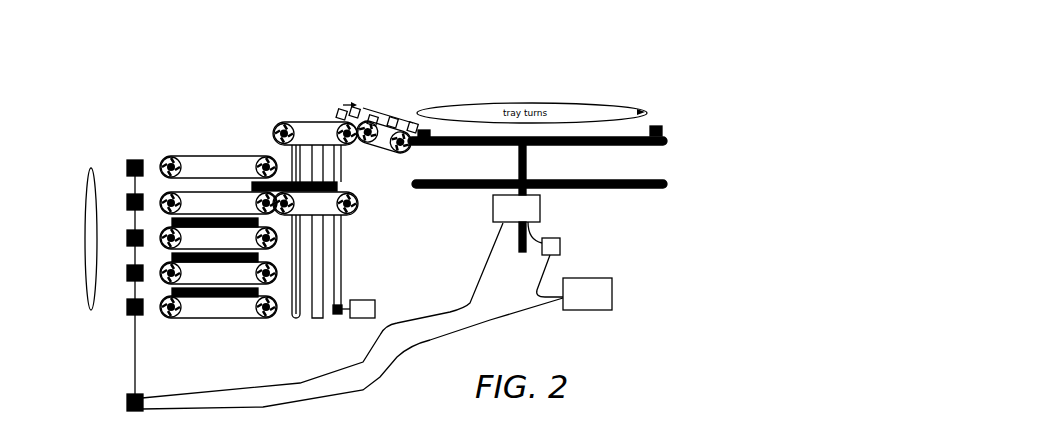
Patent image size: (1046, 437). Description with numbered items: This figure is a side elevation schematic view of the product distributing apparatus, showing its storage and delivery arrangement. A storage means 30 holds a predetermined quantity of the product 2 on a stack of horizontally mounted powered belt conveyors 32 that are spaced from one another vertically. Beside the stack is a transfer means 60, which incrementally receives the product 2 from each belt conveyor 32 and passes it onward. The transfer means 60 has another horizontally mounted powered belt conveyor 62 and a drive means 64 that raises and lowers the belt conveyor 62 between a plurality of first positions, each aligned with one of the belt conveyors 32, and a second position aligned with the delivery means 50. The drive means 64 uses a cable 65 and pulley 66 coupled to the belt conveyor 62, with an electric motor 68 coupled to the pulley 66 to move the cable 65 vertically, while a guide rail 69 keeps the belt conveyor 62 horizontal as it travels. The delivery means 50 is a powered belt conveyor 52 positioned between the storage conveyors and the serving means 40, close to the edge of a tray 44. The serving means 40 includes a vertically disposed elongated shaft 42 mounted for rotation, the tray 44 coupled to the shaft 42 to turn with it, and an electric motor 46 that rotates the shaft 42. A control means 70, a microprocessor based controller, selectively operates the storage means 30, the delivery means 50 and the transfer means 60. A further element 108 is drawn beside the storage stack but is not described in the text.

The product 2 is at (428, 120).
The storage means 30 is at (142, 139).
The belt conveyor 32 is at (205, 165).
The serving means 40 is at (668, 107).
The elongated shaft 42 is at (528, 166).
The tray 44 is at (478, 143).
The electric motor 46 is at (540, 204).
The delivery means 50 is at (421, 88).
The powered belt conveyor 52 is at (382, 125).
The transfer means 60 is at (303, 100).
The powered belt conveyor 62 is at (358, 206).
The drive means 64 is at (262, 333).
The cable 65 is at (347, 263).
The pulley 66 is at (337, 313).
The electric motor 68 is at (378, 305).
The guide rail 69 is at (310, 316).
The control means 70 is at (612, 293).
The guide plate 108 is at (87, 243).